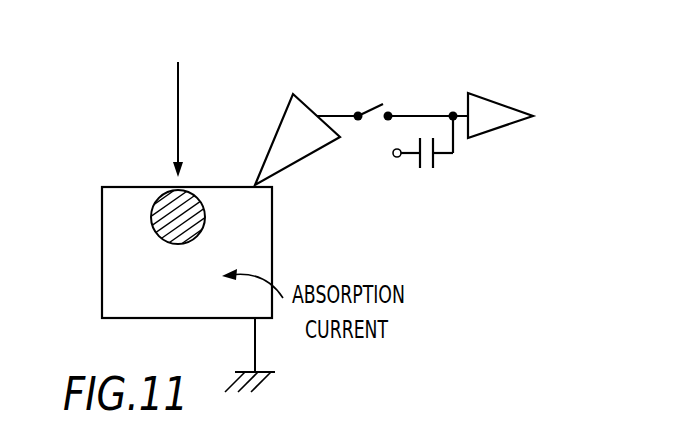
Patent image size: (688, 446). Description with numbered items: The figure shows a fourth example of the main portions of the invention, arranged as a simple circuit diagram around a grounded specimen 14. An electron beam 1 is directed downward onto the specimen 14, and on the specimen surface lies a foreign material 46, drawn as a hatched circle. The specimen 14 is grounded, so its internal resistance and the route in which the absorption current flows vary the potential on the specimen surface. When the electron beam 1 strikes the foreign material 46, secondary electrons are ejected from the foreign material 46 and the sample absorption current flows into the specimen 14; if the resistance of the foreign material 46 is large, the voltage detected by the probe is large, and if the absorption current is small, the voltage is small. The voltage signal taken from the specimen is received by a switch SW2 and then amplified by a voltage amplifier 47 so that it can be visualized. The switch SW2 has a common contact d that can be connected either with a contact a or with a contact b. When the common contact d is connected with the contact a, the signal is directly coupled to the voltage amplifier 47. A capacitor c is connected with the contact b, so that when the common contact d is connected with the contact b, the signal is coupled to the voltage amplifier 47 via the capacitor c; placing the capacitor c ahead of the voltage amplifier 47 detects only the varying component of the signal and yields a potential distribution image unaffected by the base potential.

The electron beam 1 is at (178, 78).
The specimen 14 is at (250, 219).
The foreign material 46 is at (152, 211).
The voltage amplifier 47 is at (494, 97).
The switch SW2 is at (381, 104).
The contact a is at (390, 113).
The contact b is at (398, 135).
The capacitor c is at (425, 168).
The common contact d is at (357, 113).